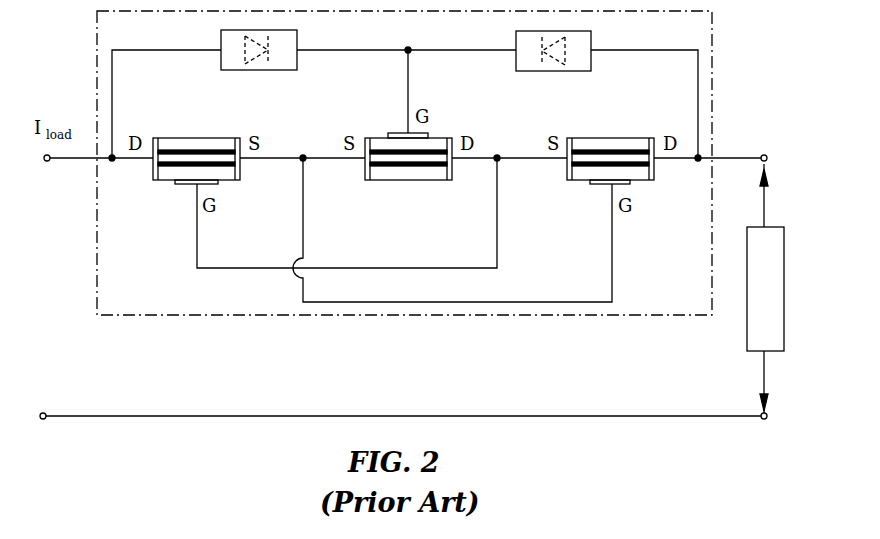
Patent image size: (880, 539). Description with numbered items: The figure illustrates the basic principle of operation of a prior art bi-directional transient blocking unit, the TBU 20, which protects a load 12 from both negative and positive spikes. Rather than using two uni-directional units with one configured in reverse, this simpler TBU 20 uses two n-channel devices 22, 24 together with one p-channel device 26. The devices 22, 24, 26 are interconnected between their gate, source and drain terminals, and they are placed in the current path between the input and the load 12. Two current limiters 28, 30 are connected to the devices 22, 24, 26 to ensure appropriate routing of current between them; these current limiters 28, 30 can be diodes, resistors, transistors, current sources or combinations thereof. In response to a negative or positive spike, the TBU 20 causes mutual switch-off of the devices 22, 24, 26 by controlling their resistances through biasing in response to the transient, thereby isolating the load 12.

The load 12 is at (747, 335).
The bi-directional TBU 20 is at (712, 78).
The n-channel device 22 is at (197, 138).
The n-channel device 24 is at (620, 138).
The p-channel device 26 is at (410, 181).
The current limiter 28 is at (297, 62).
The current limiter 30 is at (516, 62).